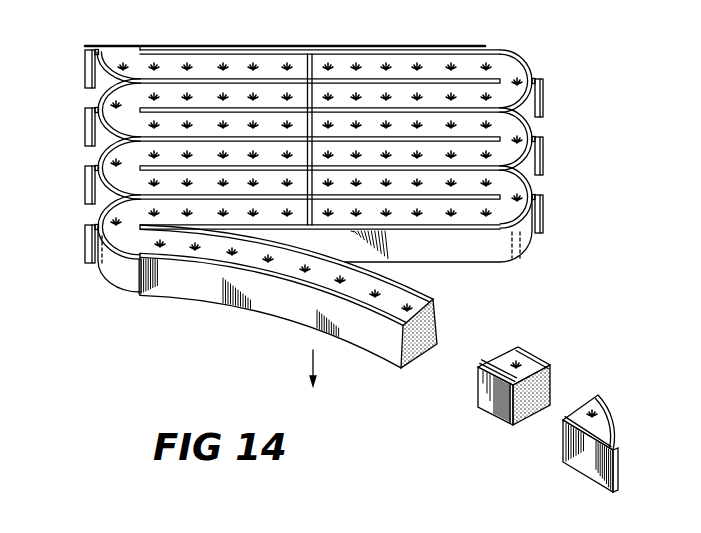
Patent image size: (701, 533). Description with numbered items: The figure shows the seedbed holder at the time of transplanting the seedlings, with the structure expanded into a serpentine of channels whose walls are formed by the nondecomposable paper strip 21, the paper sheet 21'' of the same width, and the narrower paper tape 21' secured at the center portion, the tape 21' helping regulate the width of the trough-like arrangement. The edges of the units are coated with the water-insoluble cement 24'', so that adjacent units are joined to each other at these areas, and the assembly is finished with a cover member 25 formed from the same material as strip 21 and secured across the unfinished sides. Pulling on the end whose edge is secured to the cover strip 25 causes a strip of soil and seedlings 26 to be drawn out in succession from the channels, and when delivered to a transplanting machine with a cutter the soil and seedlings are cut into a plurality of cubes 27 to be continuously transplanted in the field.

The nondecomposable paper strip 21 is at (376, 232).
The narrower nondecomposable paper tape 21' is at (309, 146).
The nondecomposable paper sheet 21'' is at (280, 216).
The water-insoluble cement 24'' is at (354, 271).
The cover member 25 is at (162, 46).
The strip of soil and seedlings 26 is at (416, 64).
The cubes 27 is at (535, 412).